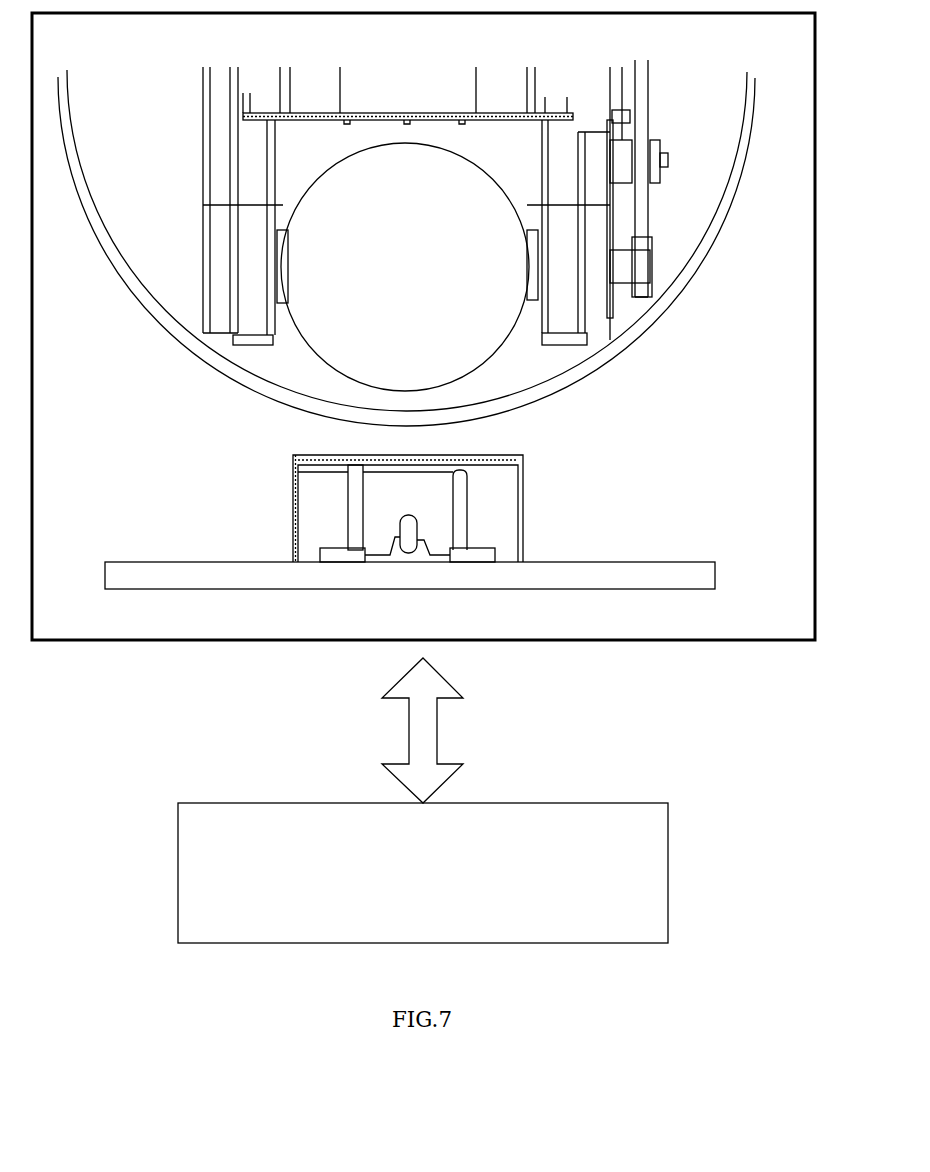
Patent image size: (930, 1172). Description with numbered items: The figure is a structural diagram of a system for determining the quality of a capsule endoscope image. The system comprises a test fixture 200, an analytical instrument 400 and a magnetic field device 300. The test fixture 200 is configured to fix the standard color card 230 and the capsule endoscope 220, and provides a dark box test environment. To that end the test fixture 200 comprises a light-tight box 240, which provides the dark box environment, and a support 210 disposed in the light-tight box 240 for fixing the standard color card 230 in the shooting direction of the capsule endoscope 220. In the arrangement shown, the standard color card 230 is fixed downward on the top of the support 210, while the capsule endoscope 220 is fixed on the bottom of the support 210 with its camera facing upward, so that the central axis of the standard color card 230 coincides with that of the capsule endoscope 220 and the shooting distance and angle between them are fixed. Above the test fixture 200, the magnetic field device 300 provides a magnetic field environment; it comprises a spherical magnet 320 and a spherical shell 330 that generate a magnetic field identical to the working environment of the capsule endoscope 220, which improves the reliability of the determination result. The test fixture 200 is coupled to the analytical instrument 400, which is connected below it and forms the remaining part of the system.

The magnetic field device 300 is at (195, 210).
The spherical magnet 320 is at (462, 318).
The spherical shell 330 is at (535, 390).
The test fixture 200 is at (454, 491).
The support 210 is at (458, 487).
The capsule endoscope 220 is at (413, 530).
The standard color card 230 is at (348, 467).
The light-tight box 240 is at (293, 522).
The analytical instrument 400 is at (622, 889).